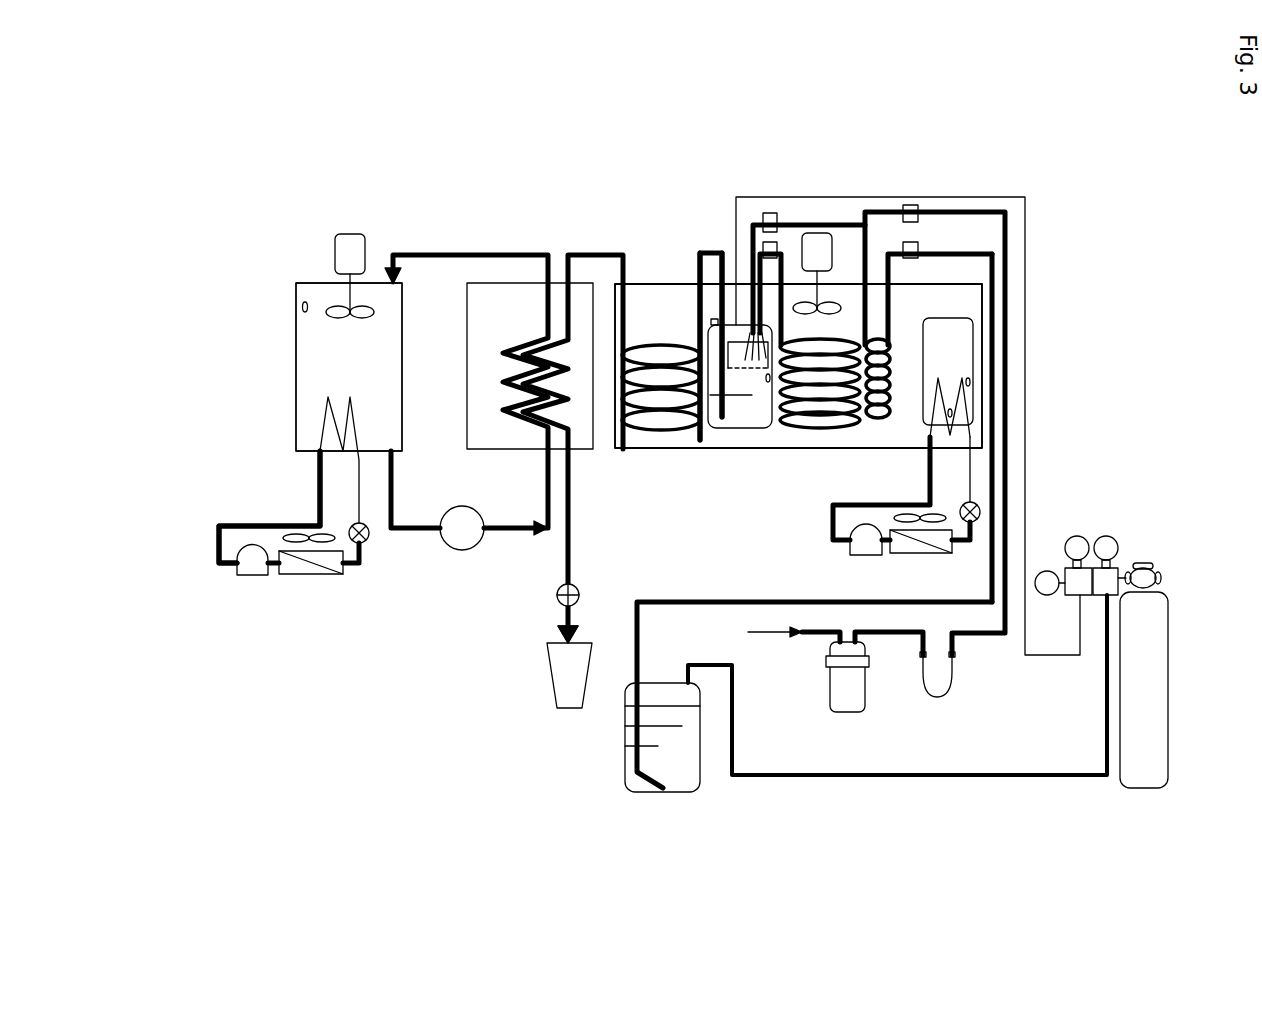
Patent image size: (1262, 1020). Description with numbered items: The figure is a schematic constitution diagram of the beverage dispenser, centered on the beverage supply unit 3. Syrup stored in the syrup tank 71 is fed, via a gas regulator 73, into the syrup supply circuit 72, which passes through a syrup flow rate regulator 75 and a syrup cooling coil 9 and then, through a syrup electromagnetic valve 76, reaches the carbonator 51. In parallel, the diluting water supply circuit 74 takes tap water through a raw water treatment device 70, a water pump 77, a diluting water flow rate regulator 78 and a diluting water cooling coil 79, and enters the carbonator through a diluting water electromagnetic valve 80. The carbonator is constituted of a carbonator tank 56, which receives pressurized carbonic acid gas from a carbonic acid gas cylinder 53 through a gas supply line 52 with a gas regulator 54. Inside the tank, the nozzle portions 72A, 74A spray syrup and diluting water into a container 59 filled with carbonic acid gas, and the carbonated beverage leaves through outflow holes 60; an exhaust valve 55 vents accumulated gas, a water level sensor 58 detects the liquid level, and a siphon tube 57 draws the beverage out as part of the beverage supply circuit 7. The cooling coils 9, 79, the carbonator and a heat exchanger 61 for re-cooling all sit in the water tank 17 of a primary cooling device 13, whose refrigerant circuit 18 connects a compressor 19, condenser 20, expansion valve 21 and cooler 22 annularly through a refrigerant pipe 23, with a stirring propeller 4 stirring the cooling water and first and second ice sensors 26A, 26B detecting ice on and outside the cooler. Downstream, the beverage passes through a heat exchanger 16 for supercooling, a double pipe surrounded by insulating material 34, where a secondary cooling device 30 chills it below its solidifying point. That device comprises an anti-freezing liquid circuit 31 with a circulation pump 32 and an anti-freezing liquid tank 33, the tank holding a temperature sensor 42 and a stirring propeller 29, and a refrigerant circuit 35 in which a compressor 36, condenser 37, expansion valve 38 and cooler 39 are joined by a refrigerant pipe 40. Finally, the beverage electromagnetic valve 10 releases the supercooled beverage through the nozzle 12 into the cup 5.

The beverage supply unit 3 is at (1052, 222).
The stirring propeller 4 is at (825, 300).
The cup 5 is at (557, 680).
The beverage supply circuit 7 is at (590, 253).
The syrup cooling coil 9 is at (878, 420).
The beverage electromagnetic valve 10 is at (556, 595).
The nozzle 12 is at (560, 638).
The primary cooling device 13 is at (970, 583).
The heat exchanger for supercooling 16 is at (495, 283).
The water tank 17 is at (953, 284).
The refrigerant circuit 18 is at (994, 468).
The compressor 19 is at (862, 557).
The condenser 20 is at (923, 553).
The expansion valve 21 is at (982, 512).
The cooler 22 is at (960, 380).
The refrigerant pipe 23 is at (900, 505).
The first ice sensor 26A is at (952, 413).
The second ice sensor 26B is at (970, 382).
The stirring propeller 29 is at (338, 310).
The secondary cooling device 30 is at (262, 368).
The anti-freezing liquid circuit 31 is at (460, 253).
The anti-freezing liquid circulation pump 32 is at (462, 550).
The anti-freezing liquid tank 33 is at (385, 357).
The insulating material 34 is at (470, 428).
The refrigerant circuit 35 is at (256, 503).
The compressor 36 is at (250, 577).
The condenser 37 is at (310, 575).
The expansion valve 38 is at (371, 536).
The cooler 39 is at (320, 432).
The refrigerant pipe 40 is at (219, 548).
The temperature sensor 42 is at (302, 307).
The carbonator 51 is at (752, 430).
The gas supply line 52 is at (828, 197).
The carbonic acid gas cylinder 53 is at (1163, 656).
The gas regulator 54 is at (1073, 590).
The exhaust valve 55 is at (711, 322).
The carbonator tank 56 is at (742, 372).
The siphon tube 57 is at (710, 253).
The water level sensor 58 is at (770, 400).
The container 59 is at (703, 438).
The outflow holes 60 is at (730, 430).
The heat exchanger for re-cooling 61 is at (640, 420).
The raw water treatment device 70 is at (830, 695).
The syrup tank 71 is at (625, 757).
The syrup supply circuit 72 is at (710, 602).
The nozzle portion 72A is at (728, 345).
The gas regulator 73 is at (1110, 560).
The diluting water supply circuit 74 is at (1007, 290).
The nozzle portion 74A is at (785, 328).
The syrup flow rate regulator 75 is at (918, 244).
The syrup electromagnetic valve 76 is at (770, 212).
The water pump 77 is at (936, 697).
The diluting water flow rate regulator 78 is at (912, 204).
The diluting water cooling coil 79 is at (833, 427).
The diluting water electromagnetic valve 80 is at (775, 246).